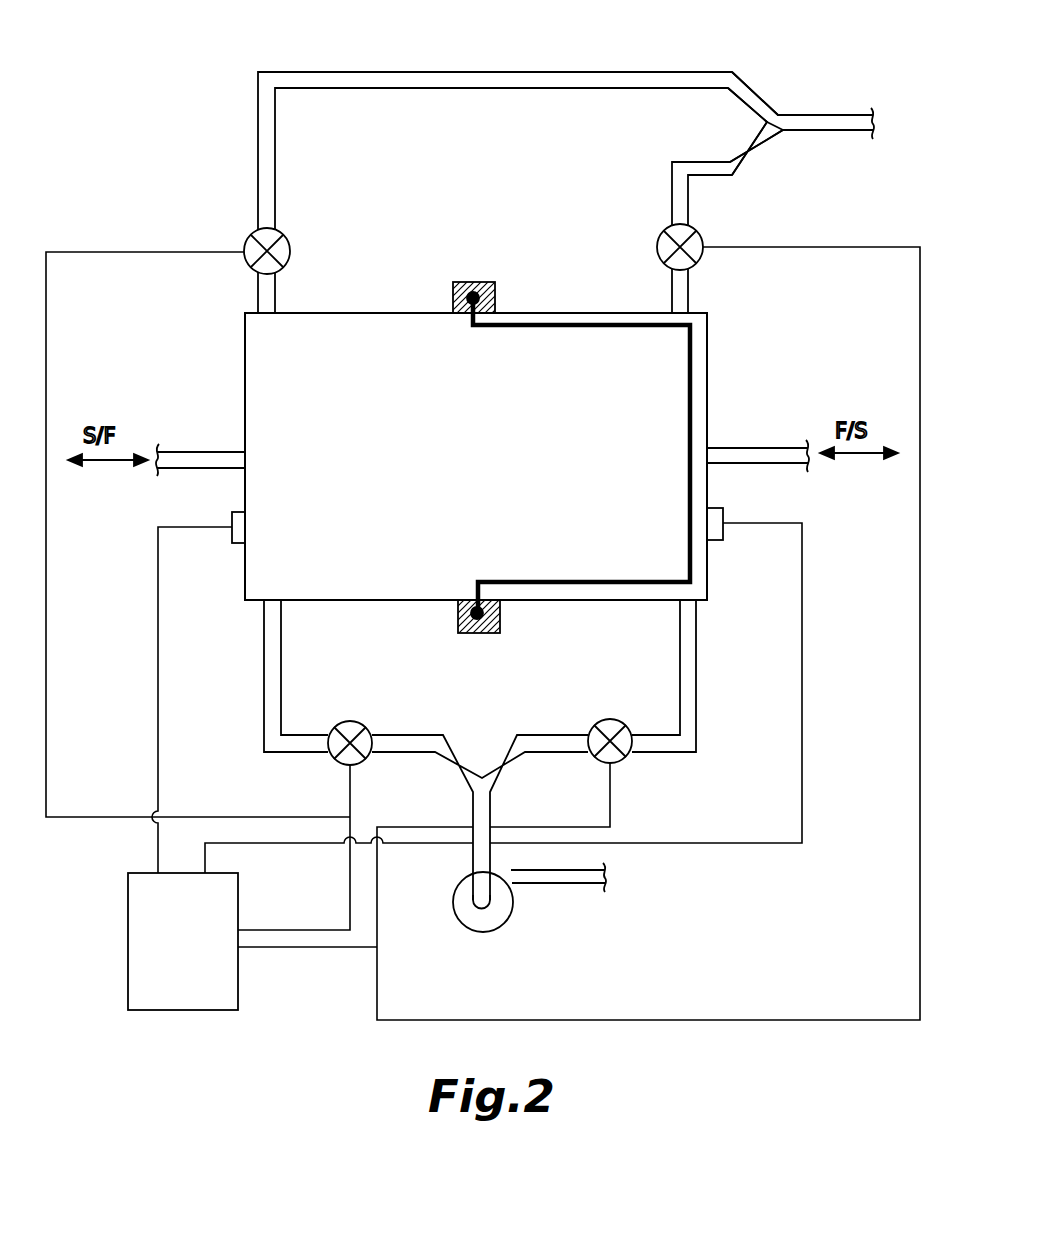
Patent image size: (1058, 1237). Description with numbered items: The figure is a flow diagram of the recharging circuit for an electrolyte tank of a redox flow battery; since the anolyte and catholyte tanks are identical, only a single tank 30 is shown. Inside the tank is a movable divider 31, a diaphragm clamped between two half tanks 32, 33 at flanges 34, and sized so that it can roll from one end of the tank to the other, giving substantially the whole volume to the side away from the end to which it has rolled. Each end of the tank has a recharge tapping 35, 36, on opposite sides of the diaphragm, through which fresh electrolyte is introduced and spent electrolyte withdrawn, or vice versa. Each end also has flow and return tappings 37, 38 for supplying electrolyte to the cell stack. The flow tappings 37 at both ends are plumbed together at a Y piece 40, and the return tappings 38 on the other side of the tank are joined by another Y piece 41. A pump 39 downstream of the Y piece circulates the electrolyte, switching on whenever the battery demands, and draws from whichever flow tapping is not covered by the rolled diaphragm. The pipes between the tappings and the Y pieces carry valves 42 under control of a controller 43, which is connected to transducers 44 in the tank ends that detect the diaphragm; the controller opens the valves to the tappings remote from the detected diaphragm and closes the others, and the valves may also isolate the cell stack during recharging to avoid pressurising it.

The tank 30 is at (395, 293).
The movable divider 31 is at (565, 338).
The half tank 32 is at (355, 603).
The half tank 33 is at (577, 600).
The flanges 34 is at (492, 282).
The recharge tapping 35 is at (203, 450).
The recharge tapping 36 is at (750, 447).
The flow tappings 37 is at (264, 640).
The return tappings 38 is at (277, 305).
The pump 39 is at (493, 917).
The Y piece 40 is at (458, 752).
The Y piece 41 is at (765, 97).
The valves 42 is at (250, 235).
The controller 43 is at (210, 968).
The transducers 44 is at (240, 533).